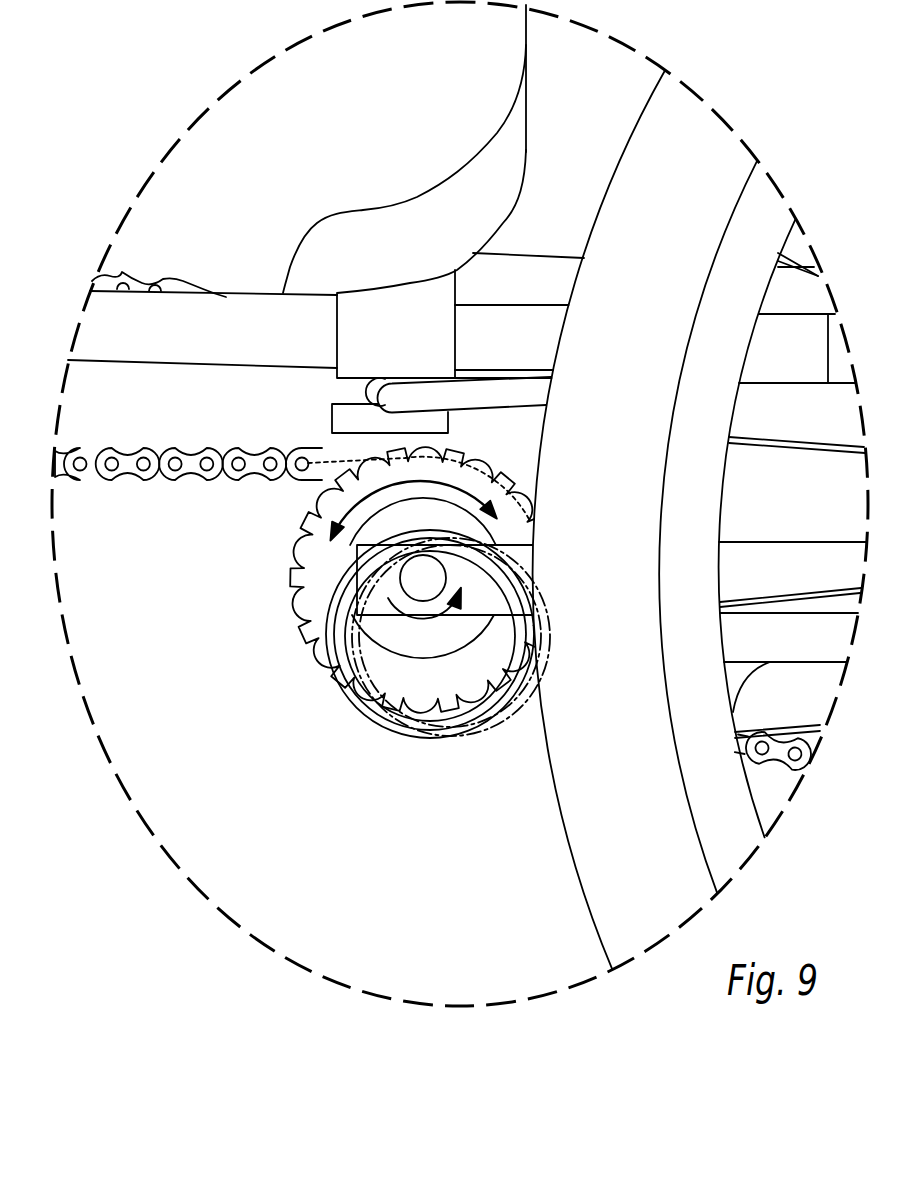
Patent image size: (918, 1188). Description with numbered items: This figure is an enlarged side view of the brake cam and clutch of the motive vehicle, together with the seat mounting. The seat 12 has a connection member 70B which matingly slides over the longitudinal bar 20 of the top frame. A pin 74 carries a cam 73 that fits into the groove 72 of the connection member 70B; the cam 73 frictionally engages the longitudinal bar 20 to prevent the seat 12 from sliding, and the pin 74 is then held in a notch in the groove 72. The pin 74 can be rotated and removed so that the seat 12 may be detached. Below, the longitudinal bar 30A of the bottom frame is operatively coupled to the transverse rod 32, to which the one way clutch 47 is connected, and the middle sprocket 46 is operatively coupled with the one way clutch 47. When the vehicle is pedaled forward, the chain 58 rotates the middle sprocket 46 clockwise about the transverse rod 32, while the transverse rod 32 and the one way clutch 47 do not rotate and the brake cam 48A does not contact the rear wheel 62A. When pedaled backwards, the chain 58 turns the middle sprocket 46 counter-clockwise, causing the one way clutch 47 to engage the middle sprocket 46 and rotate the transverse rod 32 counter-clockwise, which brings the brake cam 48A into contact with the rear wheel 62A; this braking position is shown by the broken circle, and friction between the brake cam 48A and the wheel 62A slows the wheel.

The seat 12 is at (388, 206).
The longitudinal bar 20 is at (173, 313).
The longitudinal bar 30A is at (760, 550).
The transverse rod 32 is at (410, 577).
The middle sprocket 46 is at (307, 530).
The one way clutch 47 is at (380, 523).
The brake cam 48A is at (370, 717).
The chain 58 is at (147, 453).
The rear wheel 62A is at (647, 113).
The connection member 70B is at (337, 323).
The groove 72 is at (340, 393).
The cam 73 is at (373, 381).
The pin 74 is at (497, 393).